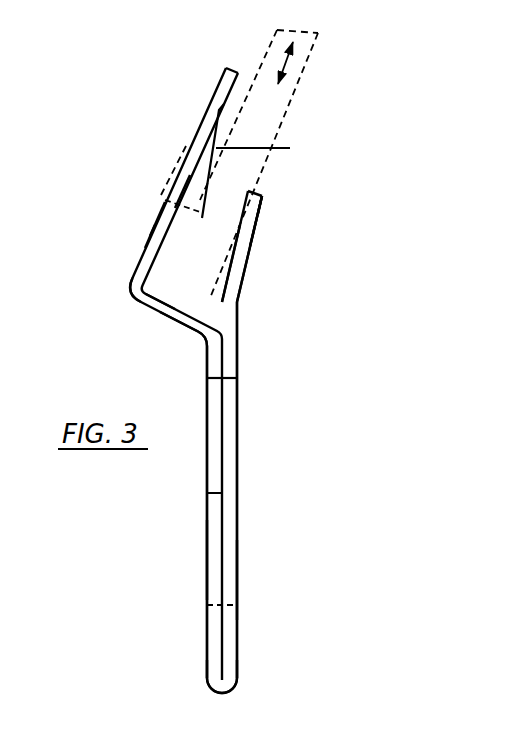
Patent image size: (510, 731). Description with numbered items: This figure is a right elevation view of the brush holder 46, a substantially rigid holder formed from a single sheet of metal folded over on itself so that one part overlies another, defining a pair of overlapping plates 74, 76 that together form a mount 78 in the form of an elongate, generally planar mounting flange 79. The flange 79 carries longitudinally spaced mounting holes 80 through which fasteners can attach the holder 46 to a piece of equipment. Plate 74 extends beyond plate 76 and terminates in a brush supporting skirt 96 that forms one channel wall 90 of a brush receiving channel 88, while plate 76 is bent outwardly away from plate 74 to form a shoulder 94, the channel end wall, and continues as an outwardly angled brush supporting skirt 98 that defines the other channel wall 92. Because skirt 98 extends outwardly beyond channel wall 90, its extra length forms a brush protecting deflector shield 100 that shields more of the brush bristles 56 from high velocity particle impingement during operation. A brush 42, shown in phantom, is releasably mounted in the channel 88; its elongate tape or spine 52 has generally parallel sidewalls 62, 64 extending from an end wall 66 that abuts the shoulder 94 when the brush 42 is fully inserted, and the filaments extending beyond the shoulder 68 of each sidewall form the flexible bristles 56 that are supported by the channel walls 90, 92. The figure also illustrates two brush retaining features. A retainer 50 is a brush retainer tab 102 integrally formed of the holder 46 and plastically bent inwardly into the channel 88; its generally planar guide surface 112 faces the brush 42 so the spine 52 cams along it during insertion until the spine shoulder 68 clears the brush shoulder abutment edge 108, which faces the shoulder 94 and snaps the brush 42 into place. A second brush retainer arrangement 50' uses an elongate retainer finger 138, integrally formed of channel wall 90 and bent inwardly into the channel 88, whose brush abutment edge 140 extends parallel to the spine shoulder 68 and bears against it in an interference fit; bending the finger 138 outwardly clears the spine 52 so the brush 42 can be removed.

The brush 42 is at (322, 47).
The brush holder 46 is at (280, 325).
The retainer 50 is at (184, 374).
The brush retainer arrangement 50' is at (306, 434).
The tape or spine 52 is at (196, 333).
The brush bristles 56 is at (307, 70).
The sidewall 62 is at (150, 245).
The sidewall 64 is at (222, 296).
The end wall 66 is at (163, 308).
The shoulder 68 is at (172, 170).
The plate 74 is at (217, 548).
The plate 76 is at (237, 582).
The mount 78 is at (282, 513).
The mounting flange 79 is at (198, 642).
The mounting holes 80 is at (207, 495).
The brush receiving channel 88 is at (255, 137).
The channel wall 90 is at (243, 278).
The channel wall 92 is at (187, 220).
The shoulder 94 is at (178, 318).
The brush supporting skirt 96 is at (157, 299).
The brush supporting skirt 98 is at (157, 230).
The brush protecting deflector shield 100 is at (226, 68).
The brush retainer tab 102 is at (197, 115).
The brush shoulder abutment edge 108 is at (163, 196).
The guide surface 112 is at (269, 153).
The retainer finger 138 is at (262, 195).
The brush abutment edge 140 is at (262, 212).